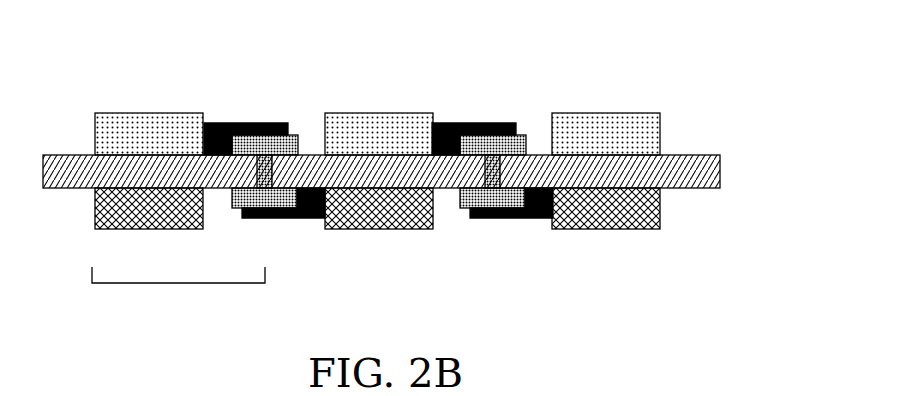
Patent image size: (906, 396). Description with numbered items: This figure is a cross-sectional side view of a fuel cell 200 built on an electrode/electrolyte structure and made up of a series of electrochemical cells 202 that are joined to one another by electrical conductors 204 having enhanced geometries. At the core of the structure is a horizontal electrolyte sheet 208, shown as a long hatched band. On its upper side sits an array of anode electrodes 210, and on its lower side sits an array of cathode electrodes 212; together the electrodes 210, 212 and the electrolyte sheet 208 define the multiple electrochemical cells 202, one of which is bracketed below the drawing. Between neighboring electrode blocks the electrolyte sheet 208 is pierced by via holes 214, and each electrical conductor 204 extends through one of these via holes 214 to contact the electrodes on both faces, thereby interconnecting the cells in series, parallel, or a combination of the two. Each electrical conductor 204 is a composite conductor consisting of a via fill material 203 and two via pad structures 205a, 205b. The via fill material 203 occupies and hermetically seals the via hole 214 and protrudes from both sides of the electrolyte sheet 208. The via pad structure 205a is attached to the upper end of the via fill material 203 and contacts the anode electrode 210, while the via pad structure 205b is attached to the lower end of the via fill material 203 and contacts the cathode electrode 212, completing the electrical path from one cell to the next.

The fuel cell 200 is at (704, 44).
The electrochemical cell 202 is at (178, 285).
The via fill material 203 is at (300, 135).
The electrical conductor 204 is at (314, 72).
The via pad structure 205a is at (243, 123).
The via pad structure 205b is at (287, 220).
The electrolyte sheet 208 is at (685, 195).
The anode electrode 210 is at (158, 113).
The cathode electrode 212 is at (153, 230).
The via hole 214 is at (256, 170).